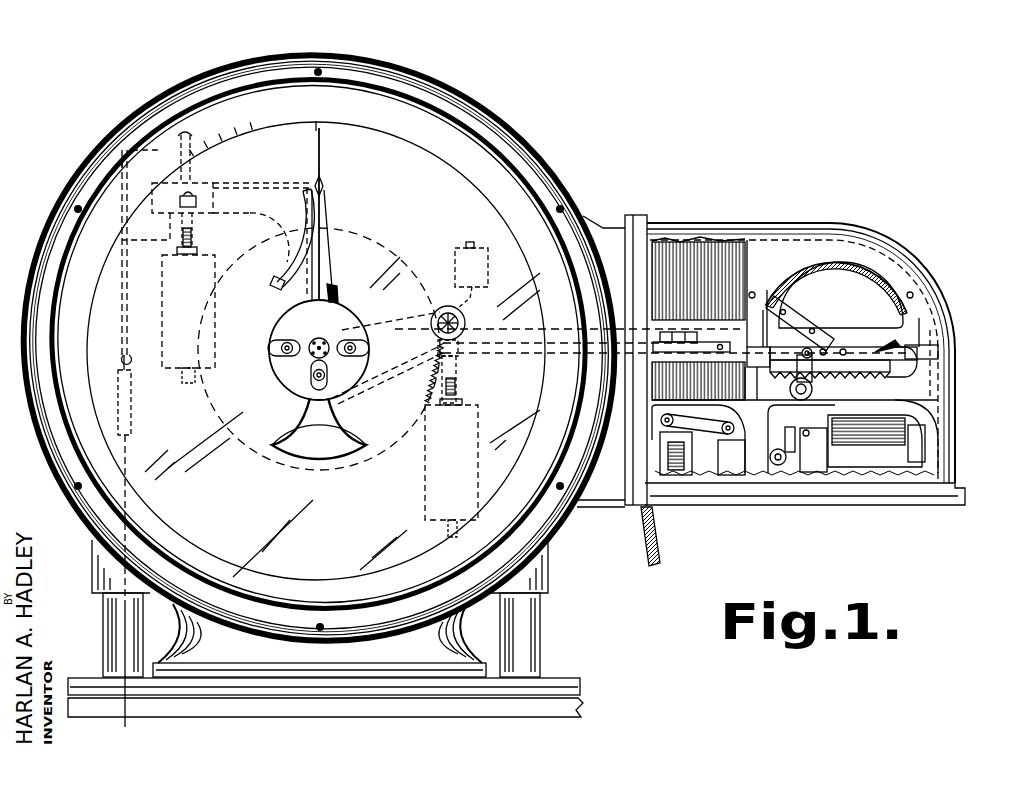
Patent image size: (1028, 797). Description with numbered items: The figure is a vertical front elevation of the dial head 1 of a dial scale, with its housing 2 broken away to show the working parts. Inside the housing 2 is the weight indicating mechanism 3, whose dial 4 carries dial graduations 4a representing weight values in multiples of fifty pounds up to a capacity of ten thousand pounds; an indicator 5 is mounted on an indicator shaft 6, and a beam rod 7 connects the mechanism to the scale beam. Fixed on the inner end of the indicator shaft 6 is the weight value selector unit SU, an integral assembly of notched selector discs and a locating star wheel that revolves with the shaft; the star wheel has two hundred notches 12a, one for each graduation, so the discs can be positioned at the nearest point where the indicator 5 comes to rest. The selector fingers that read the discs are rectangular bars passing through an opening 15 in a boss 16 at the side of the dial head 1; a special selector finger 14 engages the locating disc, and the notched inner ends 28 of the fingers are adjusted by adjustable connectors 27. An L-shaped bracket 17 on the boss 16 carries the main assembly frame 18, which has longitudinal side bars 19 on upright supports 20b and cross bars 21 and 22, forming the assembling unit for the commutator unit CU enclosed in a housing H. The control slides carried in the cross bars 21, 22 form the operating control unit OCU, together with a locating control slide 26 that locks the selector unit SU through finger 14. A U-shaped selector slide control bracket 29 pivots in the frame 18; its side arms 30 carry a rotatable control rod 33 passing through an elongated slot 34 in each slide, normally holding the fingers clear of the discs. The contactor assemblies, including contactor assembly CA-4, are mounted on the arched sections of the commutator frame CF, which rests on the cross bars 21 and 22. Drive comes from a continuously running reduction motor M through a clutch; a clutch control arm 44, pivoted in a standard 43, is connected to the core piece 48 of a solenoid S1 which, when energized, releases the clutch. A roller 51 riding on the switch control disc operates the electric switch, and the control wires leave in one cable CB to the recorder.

The dial head 1 is at (466, 632).
The housing 2 is at (479, 120).
The weight indicating mechanism 3 is at (376, 323).
The dial 4 is at (402, 122).
The dial graduations 4a is at (255, 112).
The indicator 5 is at (325, 192).
The indicator shaft 6 is at (407, 343).
The beam rod 7 is at (128, 521).
The notches 12a is at (440, 383).
The special selector finger 14 is at (556, 345).
The opening 15 is at (609, 285).
The boss 16 is at (601, 505).
The L-shaped bracket 17 is at (767, 500).
The main assembly frame 18 is at (923, 392).
The longitudinal side bar 19 is at (850, 395).
The upright support 20b is at (757, 455).
The cross bar 21 is at (757, 368).
The cross bar 22 is at (920, 355).
The locating control slide 26 is at (783, 362).
The adjustable connectors 27 is at (700, 353).
The notched inner ends 28 is at (445, 348).
The selector slide control bracket 29 is at (813, 390).
The side arms 30 is at (850, 372).
The rotatable control rod 33 is at (815, 352).
The elongated slot 34 is at (792, 347).
The standard 43 is at (727, 468).
The clutch control arm 44 is at (710, 426).
The core piece 48 is at (880, 368).
The roller 51 is at (640, 247).
The contactor assembly CA-4 is at (796, 260).
The cable CB is at (658, 547).
The commutator frame CF is at (757, 338).
The commutator unit CU is at (922, 314).
The housing H is at (962, 437).
The reduction motor M is at (872, 460).
The operating control unit OCU is at (882, 352).
The solenoid S1 is at (683, 473).
The weight value selector unit SU is at (375, 240).